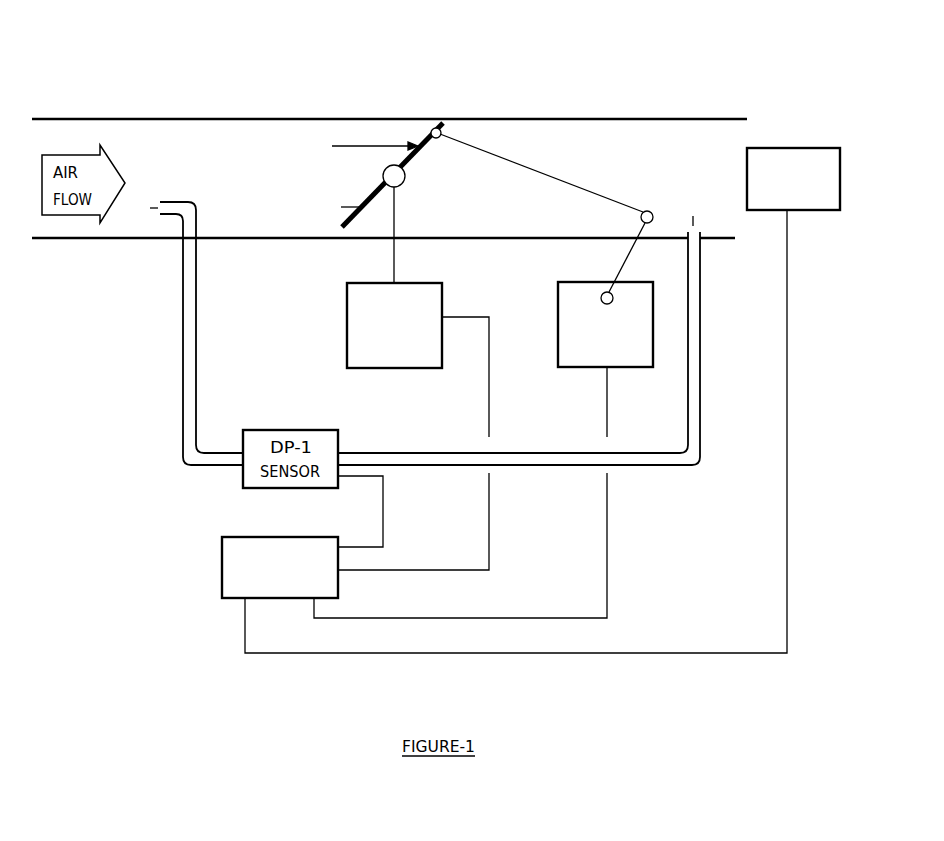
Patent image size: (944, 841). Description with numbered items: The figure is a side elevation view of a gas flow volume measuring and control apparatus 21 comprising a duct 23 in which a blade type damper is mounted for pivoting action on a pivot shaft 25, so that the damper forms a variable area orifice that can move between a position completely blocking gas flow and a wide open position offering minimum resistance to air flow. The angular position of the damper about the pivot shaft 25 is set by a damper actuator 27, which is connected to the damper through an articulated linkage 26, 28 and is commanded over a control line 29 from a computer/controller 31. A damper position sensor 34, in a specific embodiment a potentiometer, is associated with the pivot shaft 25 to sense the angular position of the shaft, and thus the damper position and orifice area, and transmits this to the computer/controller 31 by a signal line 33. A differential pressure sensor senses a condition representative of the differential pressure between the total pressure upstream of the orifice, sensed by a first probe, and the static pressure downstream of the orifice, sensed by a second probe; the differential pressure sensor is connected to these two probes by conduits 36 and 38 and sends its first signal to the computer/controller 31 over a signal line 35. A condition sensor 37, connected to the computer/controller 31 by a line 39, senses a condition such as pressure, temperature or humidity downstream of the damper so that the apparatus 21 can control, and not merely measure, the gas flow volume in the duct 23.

The gas flow volume measuring and control apparatus 21 is at (668, 62).
The duct 23 is at (580, 105).
The pivot shaft 25 is at (394, 177).
The articulated linkage 26 is at (557, 176).
The damper actuator 27 is at (558, 300).
The articulated linkage 28 is at (641, 217).
The control line 29 is at (610, 514).
The computer/controller 31 is at (236, 537).
The signal line 33 is at (491, 367).
The damper position sensor 34 is at (407, 281).
The signal line 35 is at (386, 512).
The conduit 36 is at (198, 320).
The condition sensor 37 is at (793, 147).
The conduit 38 is at (703, 310).
The line 39 is at (789, 524).